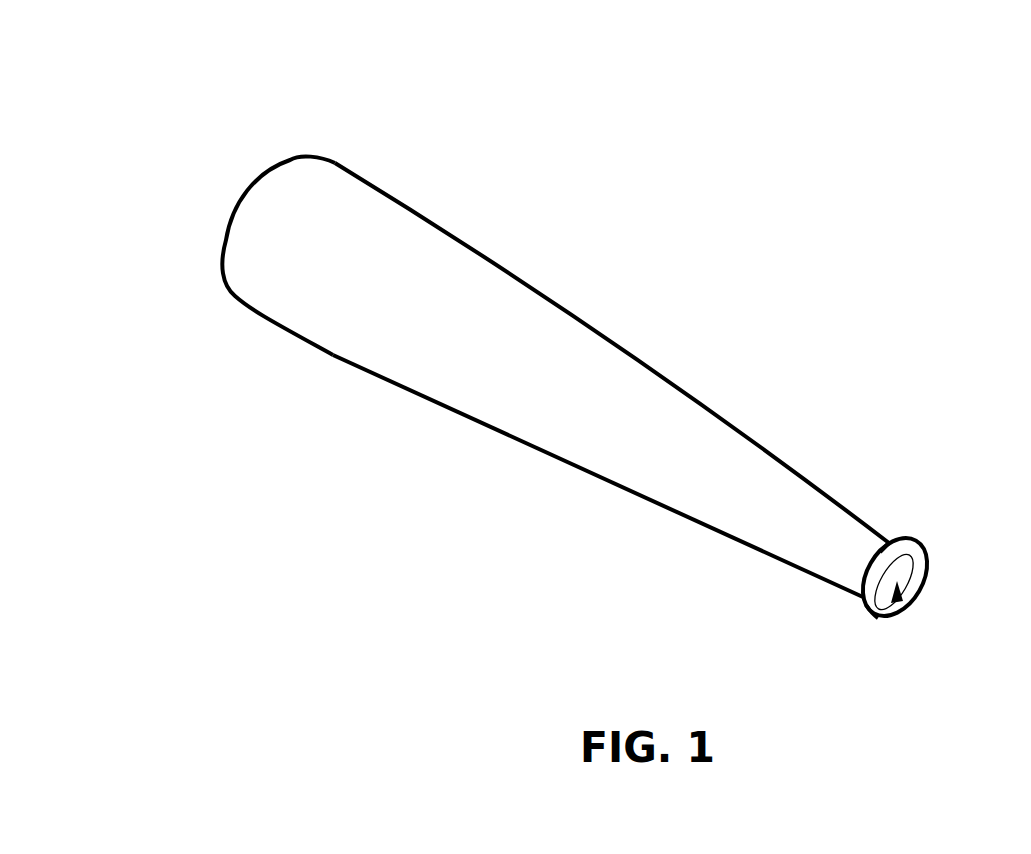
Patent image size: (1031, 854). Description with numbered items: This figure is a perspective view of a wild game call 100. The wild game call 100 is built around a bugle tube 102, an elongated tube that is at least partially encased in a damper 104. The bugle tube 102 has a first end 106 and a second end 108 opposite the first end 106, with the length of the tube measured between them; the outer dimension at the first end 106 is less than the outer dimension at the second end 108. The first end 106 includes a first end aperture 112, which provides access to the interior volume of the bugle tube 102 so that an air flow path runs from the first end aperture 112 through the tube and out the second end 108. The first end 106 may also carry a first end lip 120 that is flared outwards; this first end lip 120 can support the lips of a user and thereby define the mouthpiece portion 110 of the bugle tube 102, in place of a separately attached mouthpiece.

The wild game call 100 is at (184, 82).
The bugle tube 102 is at (916, 550).
The damper 104 is at (637, 380).
The first end 106 is at (923, 573).
The second end 108 is at (281, 162).
The mouthpiece portion 110 is at (875, 560).
The first end aperture 112 is at (898, 607).
The first end lip 120 is at (872, 617).